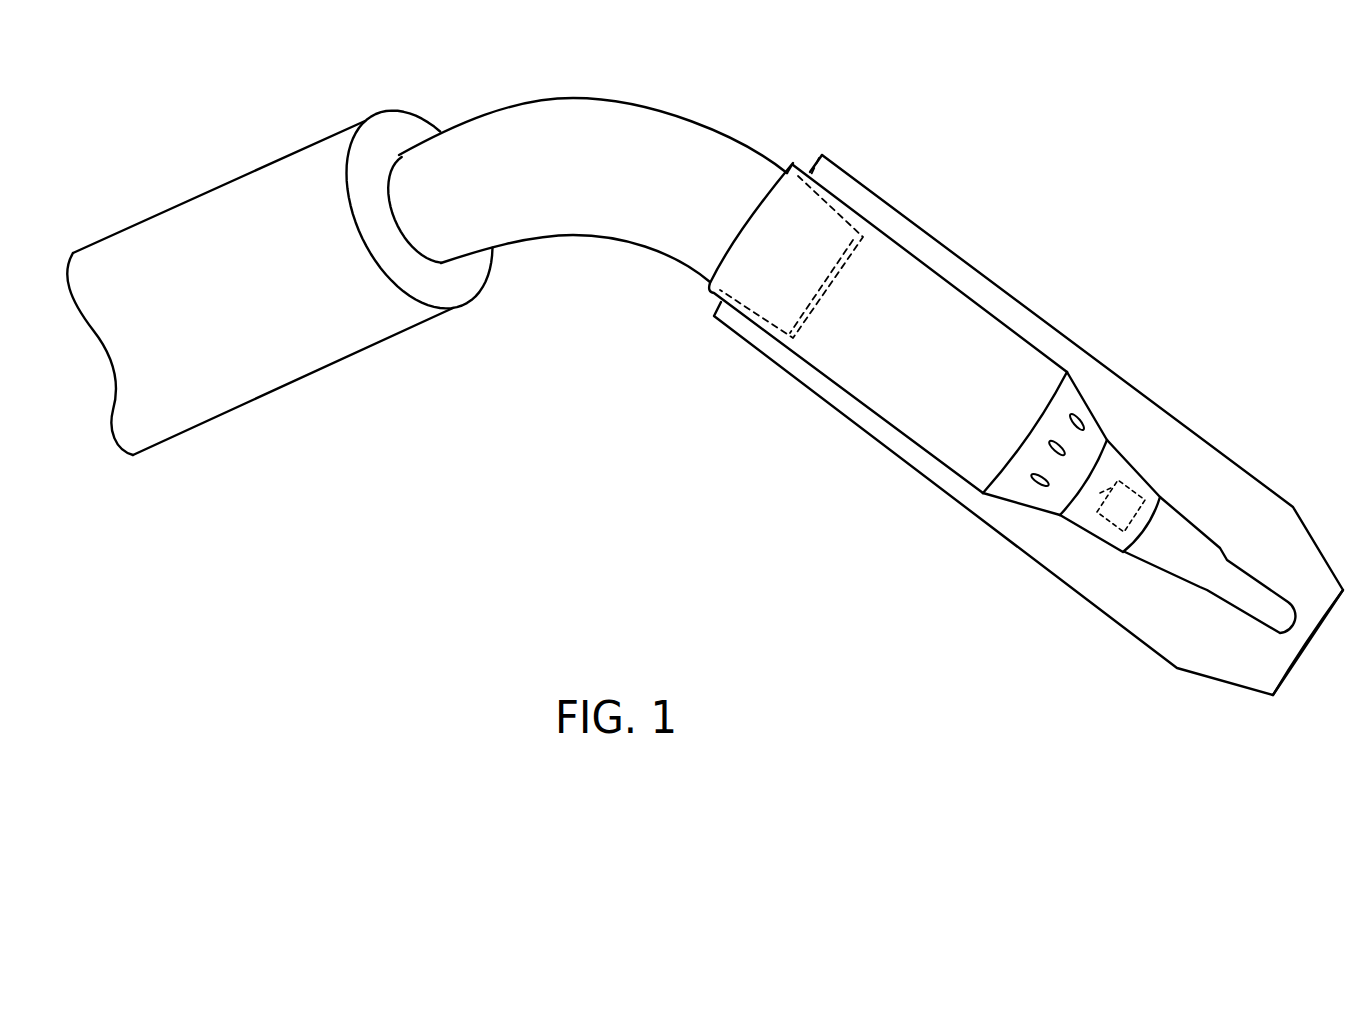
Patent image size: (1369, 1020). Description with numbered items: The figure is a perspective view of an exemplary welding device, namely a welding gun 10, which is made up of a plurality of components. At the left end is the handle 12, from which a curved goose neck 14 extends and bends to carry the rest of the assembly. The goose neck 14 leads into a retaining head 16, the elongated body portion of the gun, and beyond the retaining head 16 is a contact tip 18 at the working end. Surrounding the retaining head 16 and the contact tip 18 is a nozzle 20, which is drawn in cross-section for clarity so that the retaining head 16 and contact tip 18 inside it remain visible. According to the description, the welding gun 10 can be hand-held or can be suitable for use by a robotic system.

The welding gun 10 is at (807, 70).
The handle 12 is at (198, 213).
The goose neck 14 is at (573, 110).
The retaining head 16 is at (843, 358).
The contact tip 18 is at (1273, 622).
The nozzle 20 is at (1223, 473).